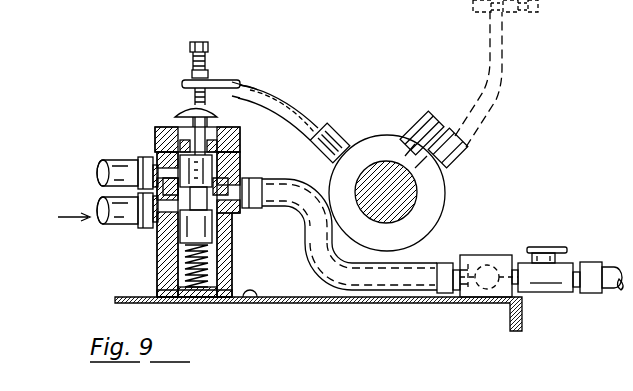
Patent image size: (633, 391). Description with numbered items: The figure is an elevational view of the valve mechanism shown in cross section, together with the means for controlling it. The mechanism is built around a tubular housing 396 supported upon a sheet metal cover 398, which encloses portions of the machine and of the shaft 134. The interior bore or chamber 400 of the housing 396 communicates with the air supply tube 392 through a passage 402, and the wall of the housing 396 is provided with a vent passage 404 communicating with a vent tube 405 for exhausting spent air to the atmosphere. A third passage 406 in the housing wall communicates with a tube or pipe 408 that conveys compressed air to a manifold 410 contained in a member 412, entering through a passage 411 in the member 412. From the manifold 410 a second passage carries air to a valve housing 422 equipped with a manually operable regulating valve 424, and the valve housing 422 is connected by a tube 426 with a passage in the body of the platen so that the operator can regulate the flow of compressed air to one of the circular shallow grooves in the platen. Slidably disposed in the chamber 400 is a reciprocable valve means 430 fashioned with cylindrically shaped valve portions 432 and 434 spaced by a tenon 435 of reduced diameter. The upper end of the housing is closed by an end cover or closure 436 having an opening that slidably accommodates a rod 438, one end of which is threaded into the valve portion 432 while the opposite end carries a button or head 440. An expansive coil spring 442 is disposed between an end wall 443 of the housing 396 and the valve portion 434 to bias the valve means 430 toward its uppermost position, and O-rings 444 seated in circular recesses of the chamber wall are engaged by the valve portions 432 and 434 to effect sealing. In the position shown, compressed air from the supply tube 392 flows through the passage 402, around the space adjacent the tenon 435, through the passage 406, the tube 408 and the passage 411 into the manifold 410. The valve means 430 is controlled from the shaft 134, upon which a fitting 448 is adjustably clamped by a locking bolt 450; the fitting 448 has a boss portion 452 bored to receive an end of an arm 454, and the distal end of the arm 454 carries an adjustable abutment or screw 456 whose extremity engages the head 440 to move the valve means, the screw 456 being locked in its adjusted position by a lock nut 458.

The shaft 134 is at (400, 191).
The air supply tube 392 is at (102, 207).
The tubular housing 396 is at (212, 264).
The sheet metal cover 398 is at (255, 299).
The chamber 400 is at (222, 130).
The passage 402 is at (160, 228).
The vent passage 404 is at (158, 128).
The vent tube 405 is at (150, 158).
The third passage 406 is at (266, 182).
The tube or pipe 408 is at (320, 300).
The manifold 410 is at (482, 268).
The passage 411 is at (467, 258).
The member 412 is at (489, 255).
The valve housing 422 is at (546, 292).
The manually operable regulating valve 424 is at (540, 248).
The tube 426 is at (612, 293).
The reciprocable valve means 430 is at (178, 112).
The valve portion 432 is at (215, 160).
The valve portion 434 is at (213, 232).
The tenon 435 is at (247, 176).
The end cover or closure 436 is at (270, 92).
The rod or member 438 is at (226, 96).
The button or head 440 is at (240, 88).
The expansive coil spring 442 is at (234, 284).
The end wall 443 is at (172, 293).
The O-rings 444 is at (170, 125).
The fitting 448 is at (404, 127).
The locking bolt 450 is at (423, 117).
The boss portion 452 is at (345, 133).
The arm or member 454 is at (328, 123).
The adjustable abutment or screw 456 is at (242, 80).
The lock nut 458 is at (190, 48).